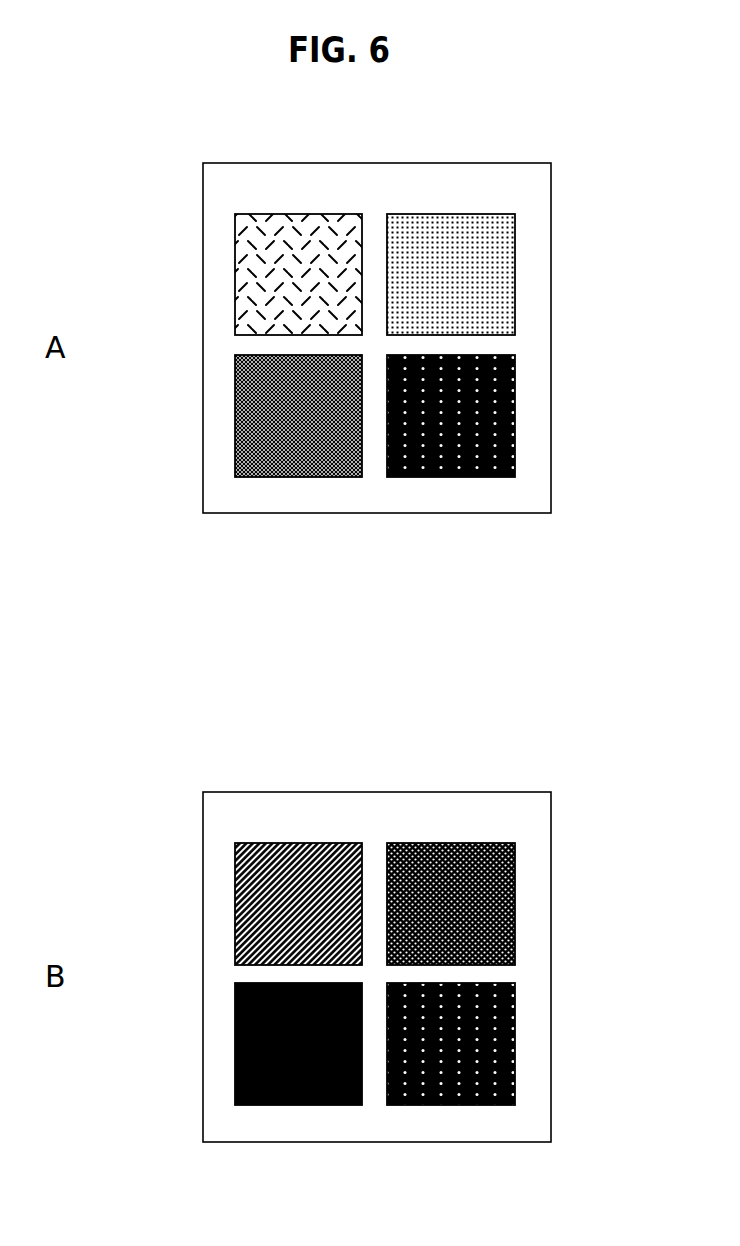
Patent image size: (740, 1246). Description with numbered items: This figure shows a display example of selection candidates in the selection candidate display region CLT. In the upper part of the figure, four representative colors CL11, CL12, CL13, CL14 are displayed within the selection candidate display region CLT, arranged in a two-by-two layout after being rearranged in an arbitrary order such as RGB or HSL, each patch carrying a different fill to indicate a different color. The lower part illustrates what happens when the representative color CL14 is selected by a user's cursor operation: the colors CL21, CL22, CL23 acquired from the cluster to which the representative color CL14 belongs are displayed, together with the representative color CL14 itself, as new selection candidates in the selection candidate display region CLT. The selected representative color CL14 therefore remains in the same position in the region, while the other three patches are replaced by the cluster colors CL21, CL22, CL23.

The selection candidate display region CLT is at (552, 343).
The representative color CL11 is at (303, 214).
The representative color CL12 is at (455, 214).
The representative color CL13 is at (298, 477).
The representative color CL14 is at (447, 477).
The color acquired from cluster CL21 is at (303, 843).
The color acquired from cluster CL22 is at (455, 843).
The color acquired from cluster CL23 is at (298, 1105).